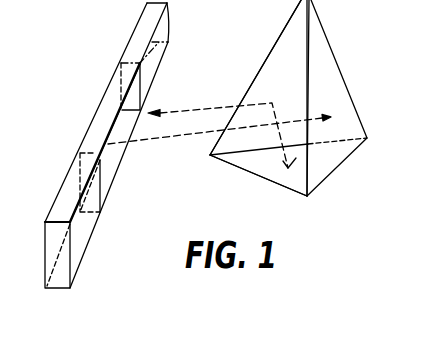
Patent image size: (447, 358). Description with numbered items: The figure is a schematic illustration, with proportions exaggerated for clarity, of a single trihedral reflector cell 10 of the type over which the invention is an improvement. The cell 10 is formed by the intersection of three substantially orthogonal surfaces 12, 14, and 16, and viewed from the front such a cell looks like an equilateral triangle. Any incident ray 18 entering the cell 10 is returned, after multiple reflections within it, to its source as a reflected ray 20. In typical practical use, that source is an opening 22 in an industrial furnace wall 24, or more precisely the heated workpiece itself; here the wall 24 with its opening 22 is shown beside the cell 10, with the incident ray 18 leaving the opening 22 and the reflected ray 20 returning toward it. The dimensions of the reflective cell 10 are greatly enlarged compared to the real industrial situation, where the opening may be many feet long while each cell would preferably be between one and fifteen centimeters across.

The trihedral reflector cell 10 is at (333, 177).
The orthogonal surface 12 is at (273, 170).
The orthogonal surface 14 is at (286, 57).
The orthogonal surface 16 is at (313, 53).
The incident ray 18 is at (172, 137).
The reflected ray 20 is at (200, 108).
The opening 22 is at (141, 103).
The industrial furnace wall 24 is at (69, 177).